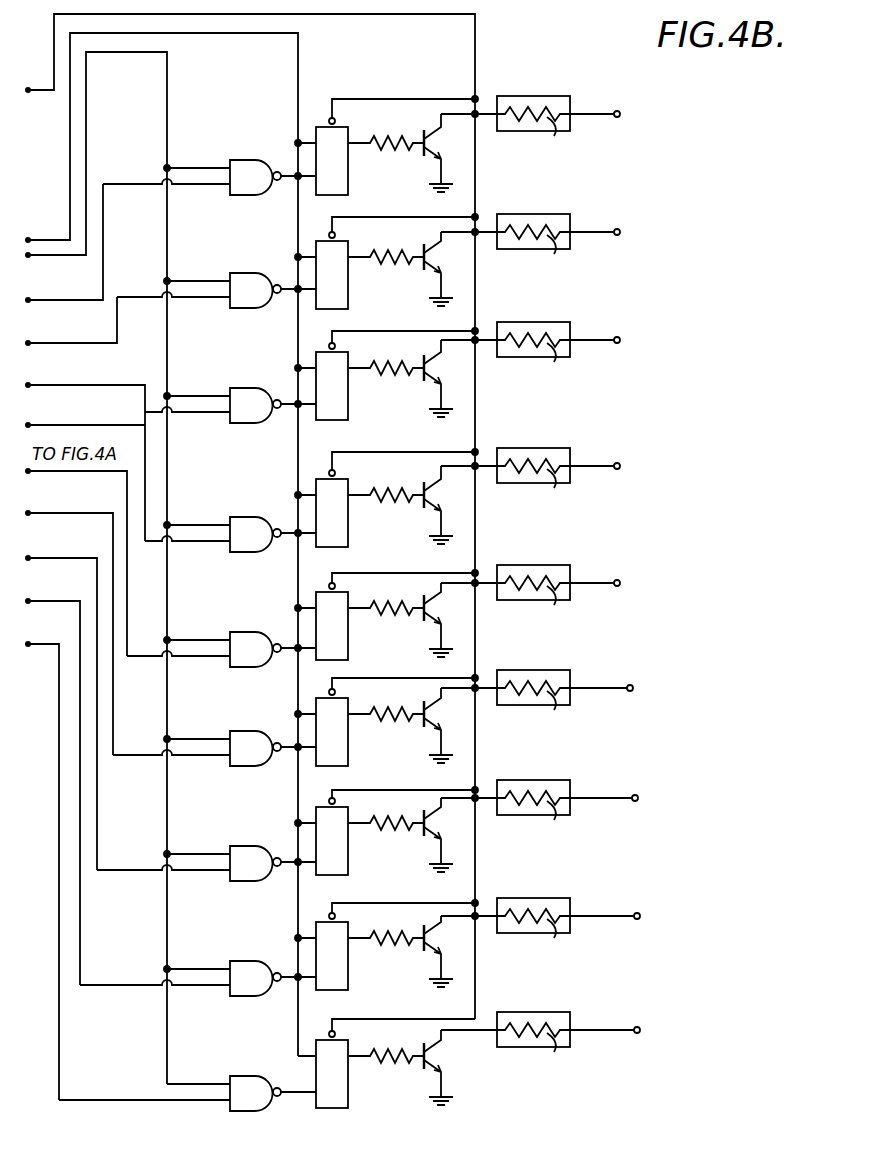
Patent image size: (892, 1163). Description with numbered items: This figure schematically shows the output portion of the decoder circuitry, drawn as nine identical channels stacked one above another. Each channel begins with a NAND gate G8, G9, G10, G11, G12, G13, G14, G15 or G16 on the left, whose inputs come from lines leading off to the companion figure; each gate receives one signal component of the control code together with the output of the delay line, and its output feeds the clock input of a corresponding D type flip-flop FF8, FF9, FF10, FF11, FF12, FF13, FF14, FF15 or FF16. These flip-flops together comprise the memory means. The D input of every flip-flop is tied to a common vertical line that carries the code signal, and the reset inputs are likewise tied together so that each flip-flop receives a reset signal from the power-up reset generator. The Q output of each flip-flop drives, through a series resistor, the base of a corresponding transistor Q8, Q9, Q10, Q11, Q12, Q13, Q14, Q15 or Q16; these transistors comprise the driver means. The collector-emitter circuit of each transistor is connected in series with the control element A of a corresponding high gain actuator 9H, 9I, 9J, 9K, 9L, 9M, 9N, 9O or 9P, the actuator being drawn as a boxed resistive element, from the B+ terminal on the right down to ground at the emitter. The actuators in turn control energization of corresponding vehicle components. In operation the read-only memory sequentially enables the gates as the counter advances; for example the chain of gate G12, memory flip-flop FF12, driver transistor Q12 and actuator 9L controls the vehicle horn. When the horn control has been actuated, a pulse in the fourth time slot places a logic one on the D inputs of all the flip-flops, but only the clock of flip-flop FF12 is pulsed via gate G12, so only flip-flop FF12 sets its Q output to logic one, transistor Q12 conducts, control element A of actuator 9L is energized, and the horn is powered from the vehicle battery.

The NAND gate G8 is at (243, 157).
The NAND gate G9 is at (243, 270).
The NAND gate G10 is at (243, 385).
The NAND gate G11 is at (243, 514).
The NAND gate G12 is at (243, 629).
The NAND gate G13 is at (243, 728).
The NAND gate G14 is at (243, 843).
The NAND gate G15 is at (243, 958).
The NAND gate G16 is at (243, 1073).
The D type flip-flop FF8 is at (349, 128).
The D type flip-flop FF9 is at (349, 246).
The D type flip-flop FF10 is at (349, 394).
The D type flip-flop FF11 is at (349, 481).
The memory flip-flop FF12 is at (349, 638).
The D type flip-flop FF13 is at (349, 737).
The D type flip-flop FF14 is at (349, 852).
The D type flip-flop FF15 is at (349, 967).
The D type flip-flop FF16 is at (349, 1082).
The transistor Q8 is at (422, 151).
The transistor Q9 is at (422, 267).
The transistor Q10 is at (422, 377).
The transistor Q11 is at (422, 503).
The driver transistor Q12 is at (422, 618).
The transistor Q13 is at (422, 724).
The transistor Q14 is at (422, 833).
The transistor Q15 is at (422, 950).
The transistor Q16 is at (422, 1067).
The high gain actuator 9H is at (562, 96).
The high gain actuator 9I is at (562, 214).
The high gain actuator 9J is at (562, 322).
The high gain actuator 9K is at (562, 448).
The high gain actuator 9L is at (562, 565).
The high gain actuator 9M is at (562, 670).
The high gain actuator 9N is at (562, 780).
The high gain actuator 9O is at (562, 898).
The high gain actuator 9P is at (562, 1012).